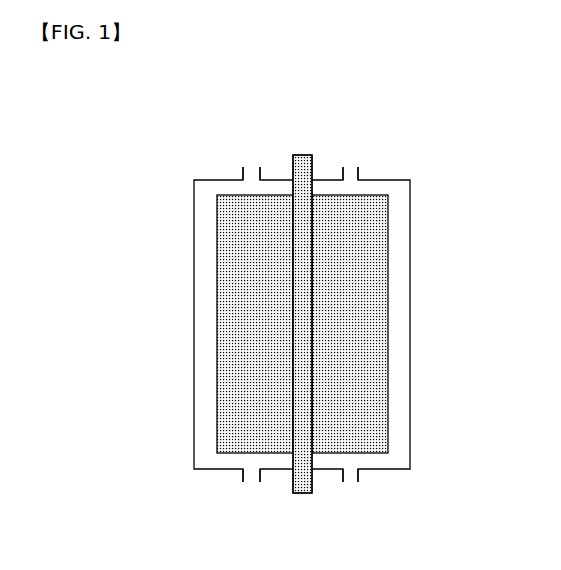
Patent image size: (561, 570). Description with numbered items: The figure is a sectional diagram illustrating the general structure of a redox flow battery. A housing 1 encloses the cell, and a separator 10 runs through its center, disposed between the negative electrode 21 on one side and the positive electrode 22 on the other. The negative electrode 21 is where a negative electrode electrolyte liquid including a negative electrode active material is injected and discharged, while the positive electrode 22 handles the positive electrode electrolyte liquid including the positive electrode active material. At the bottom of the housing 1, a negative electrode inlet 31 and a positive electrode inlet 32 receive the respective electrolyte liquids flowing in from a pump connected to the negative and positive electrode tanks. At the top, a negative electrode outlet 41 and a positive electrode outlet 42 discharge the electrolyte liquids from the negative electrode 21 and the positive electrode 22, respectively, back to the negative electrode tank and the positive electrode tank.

The housing 1 is at (413, 202).
The separator 10 is at (303, 155).
The negative electrode 21 is at (218, 322).
The positive electrode 22 is at (387, 322).
The negative electrode inlet 31 is at (252, 480).
The positive electrode inlet 32 is at (351, 480).
The negative electrode outlet 41 is at (250, 168).
The positive electrode outlet 42 is at (356, 166).